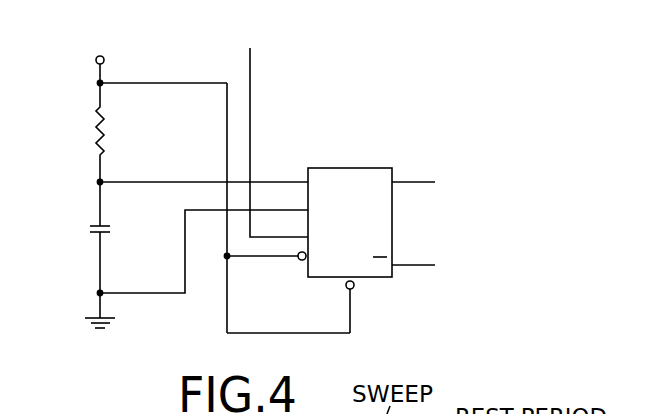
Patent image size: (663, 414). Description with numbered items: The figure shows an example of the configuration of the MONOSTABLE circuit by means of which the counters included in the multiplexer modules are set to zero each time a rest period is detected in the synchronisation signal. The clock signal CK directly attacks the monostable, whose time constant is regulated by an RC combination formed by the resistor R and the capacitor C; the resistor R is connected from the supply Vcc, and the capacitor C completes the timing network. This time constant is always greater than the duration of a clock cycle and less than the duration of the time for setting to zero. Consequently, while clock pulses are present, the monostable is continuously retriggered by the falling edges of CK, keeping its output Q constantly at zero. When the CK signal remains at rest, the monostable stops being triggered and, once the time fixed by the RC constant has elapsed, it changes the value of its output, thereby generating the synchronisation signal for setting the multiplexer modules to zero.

The supply voltage terminal Vcc is at (100, 66).
The resistor R is at (112, 131).
The capacitor C is at (110, 230).
The clock signal CK is at (270, 129).
The monostable circuit MONOSTABLE is at (357, 189).